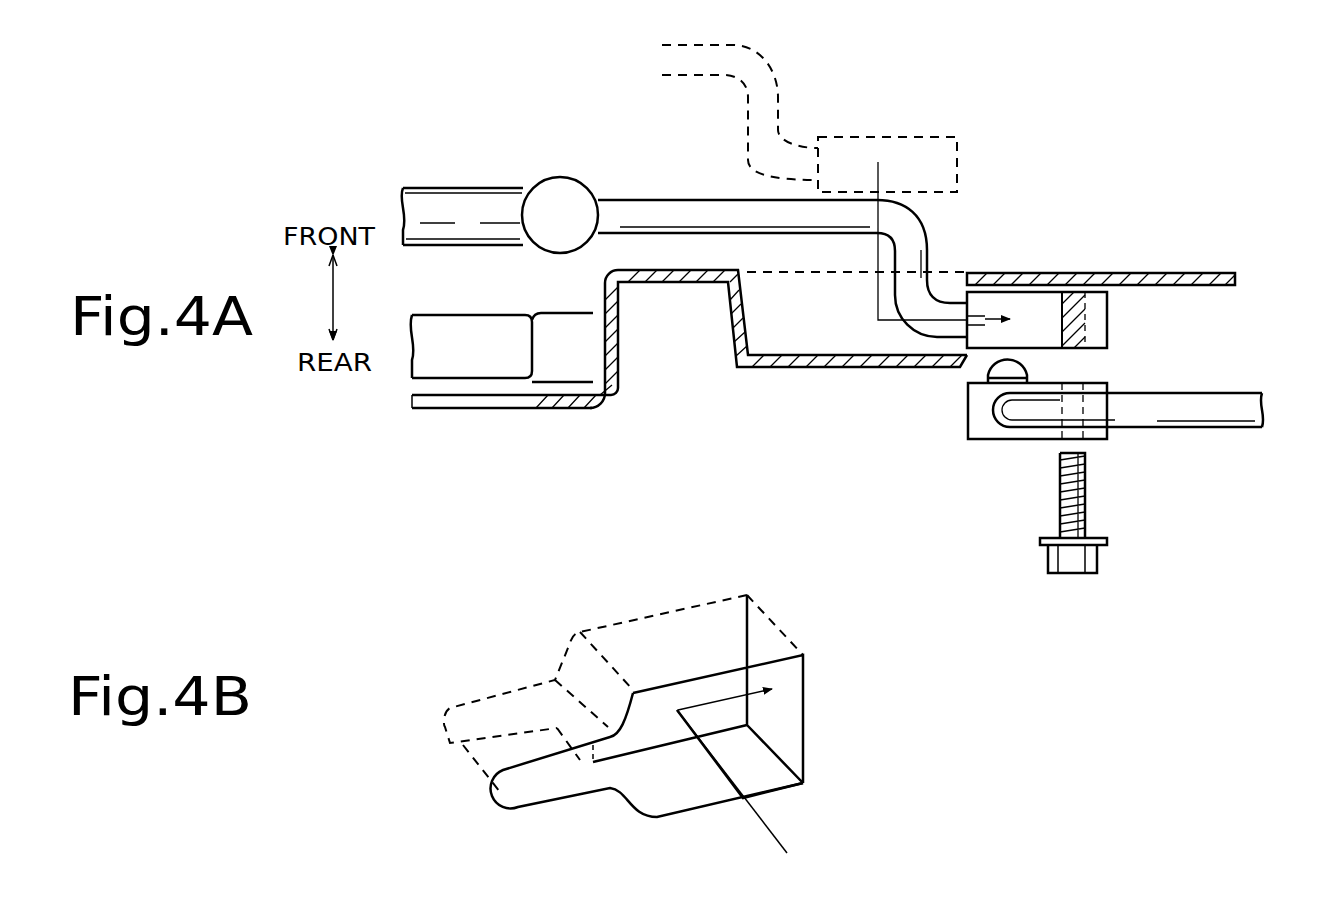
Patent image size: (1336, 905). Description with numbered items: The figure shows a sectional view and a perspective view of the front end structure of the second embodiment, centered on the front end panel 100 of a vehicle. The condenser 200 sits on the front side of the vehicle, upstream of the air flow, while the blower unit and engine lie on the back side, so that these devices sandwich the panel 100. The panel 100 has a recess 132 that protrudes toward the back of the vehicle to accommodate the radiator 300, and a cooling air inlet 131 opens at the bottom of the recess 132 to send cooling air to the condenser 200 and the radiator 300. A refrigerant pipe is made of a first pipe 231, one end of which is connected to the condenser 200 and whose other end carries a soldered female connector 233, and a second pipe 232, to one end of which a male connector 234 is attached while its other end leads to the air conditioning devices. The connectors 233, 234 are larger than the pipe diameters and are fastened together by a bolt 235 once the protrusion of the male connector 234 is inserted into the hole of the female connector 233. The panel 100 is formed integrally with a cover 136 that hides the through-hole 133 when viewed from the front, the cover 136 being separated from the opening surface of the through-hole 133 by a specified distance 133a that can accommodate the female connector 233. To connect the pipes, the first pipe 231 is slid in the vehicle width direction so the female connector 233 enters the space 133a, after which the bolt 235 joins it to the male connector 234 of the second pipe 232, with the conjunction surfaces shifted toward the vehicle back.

In FIG. 4A, the front end panel 100 is at (622, 401).
In FIG. 4A, the cooling air inlet 131 is at (452, 401).
In FIG. 4A, the recess 132 is at (570, 335).
In FIG. 4A, the through-hole 133 is at (1095, 365).
In FIG. 4B, the through-hole 133 is at (782, 708).
In FIG. 4A, the specified distance 133a is at (1000, 290).
In FIG. 4A, the cover 136 is at (1030, 272).
In FIG. 4A, the condenser 200 is at (452, 200).
In FIG. 4A, the first pipe 231 is at (645, 207).
In FIG. 4A, the second pipe 232 is at (1222, 415).
In FIG. 4A, the female connector 233 is at (1097, 303).
In FIG. 4A, the male connector 234 is at (1013, 433).
In FIG. 4A, the bolt 235 is at (1090, 562).
In FIG. 4A, the radiator 300 is at (452, 330).